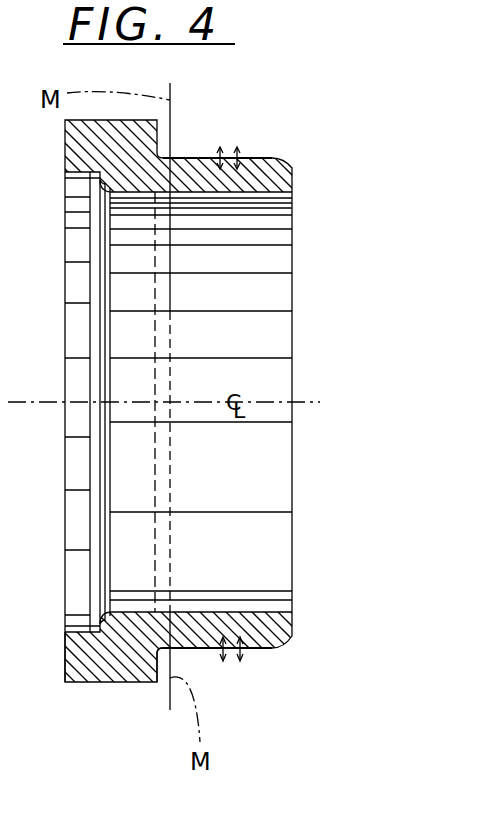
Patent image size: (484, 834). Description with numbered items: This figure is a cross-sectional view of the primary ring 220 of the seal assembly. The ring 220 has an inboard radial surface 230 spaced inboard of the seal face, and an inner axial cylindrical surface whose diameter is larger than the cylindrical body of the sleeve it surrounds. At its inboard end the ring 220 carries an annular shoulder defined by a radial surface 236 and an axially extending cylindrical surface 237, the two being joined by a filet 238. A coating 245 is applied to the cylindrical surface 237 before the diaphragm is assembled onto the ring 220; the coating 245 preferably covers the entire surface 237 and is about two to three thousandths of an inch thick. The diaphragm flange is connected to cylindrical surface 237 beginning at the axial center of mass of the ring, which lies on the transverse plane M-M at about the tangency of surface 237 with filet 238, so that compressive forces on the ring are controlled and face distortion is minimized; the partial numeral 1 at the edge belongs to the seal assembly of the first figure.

The primary ring 220 is at (301, 470).
The coating 245 is at (250, 158).
The inboard radial surface 230 is at (292, 622).
The axially extending cylindrical surface 237 is at (227, 158).
The radial surface 236 is at (155, 682).
The filet 238 is at (160, 655).
The flange (partial numeral) 1 is at (65, 657).